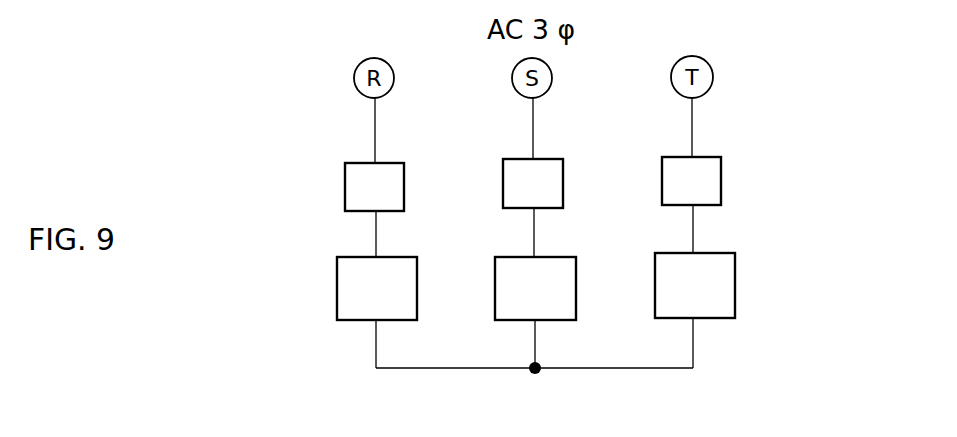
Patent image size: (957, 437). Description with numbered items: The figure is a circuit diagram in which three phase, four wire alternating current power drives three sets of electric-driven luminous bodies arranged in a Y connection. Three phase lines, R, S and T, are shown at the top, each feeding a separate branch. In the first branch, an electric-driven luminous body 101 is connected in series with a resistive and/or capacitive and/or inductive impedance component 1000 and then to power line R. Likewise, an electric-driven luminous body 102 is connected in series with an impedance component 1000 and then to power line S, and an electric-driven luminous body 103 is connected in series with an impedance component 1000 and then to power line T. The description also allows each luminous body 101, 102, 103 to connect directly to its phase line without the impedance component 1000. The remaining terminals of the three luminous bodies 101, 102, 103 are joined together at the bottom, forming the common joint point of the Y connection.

The impedance component 1000 is at (345, 187).
The electric-driven luminous body 101 is at (377, 288).
The electric-driven luminous body 102 is at (535, 288).
The electric-driven luminous body 103 is at (695, 285).